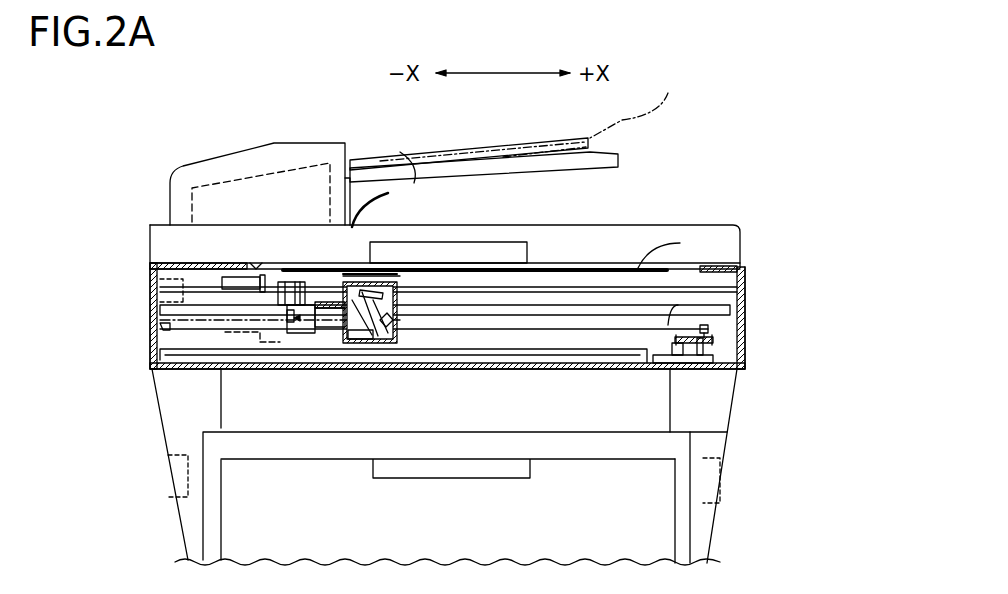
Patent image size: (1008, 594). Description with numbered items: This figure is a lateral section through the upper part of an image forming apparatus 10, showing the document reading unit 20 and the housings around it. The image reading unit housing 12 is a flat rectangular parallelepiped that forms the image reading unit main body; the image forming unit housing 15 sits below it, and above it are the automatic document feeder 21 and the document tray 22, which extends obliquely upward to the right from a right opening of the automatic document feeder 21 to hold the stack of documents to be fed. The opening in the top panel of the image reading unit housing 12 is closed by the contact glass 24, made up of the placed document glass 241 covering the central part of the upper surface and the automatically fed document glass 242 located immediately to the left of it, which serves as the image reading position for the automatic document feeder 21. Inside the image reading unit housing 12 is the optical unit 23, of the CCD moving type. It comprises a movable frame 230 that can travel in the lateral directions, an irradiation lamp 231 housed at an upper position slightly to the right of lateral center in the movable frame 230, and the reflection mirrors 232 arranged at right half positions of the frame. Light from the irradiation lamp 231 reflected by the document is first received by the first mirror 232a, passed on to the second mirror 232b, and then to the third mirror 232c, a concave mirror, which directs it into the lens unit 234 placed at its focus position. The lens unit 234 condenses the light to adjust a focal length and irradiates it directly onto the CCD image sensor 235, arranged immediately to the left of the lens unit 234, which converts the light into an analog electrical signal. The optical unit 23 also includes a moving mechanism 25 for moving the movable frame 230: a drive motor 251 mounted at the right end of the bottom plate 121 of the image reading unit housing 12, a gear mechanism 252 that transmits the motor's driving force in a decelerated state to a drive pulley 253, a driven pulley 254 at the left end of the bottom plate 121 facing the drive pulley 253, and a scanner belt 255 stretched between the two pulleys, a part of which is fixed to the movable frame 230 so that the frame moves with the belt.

The image forming apparatus 10 is at (795, 174).
The image reading unit housing 12 is at (758, 298).
The bottom plate 121 is at (538, 352).
The image forming unit housing 15 is at (232, 450).
The document reading unit 20 is at (302, 112).
The automatic document feeder 21 is at (237, 197).
The document tray 22 is at (417, 182).
The optical unit 23 is at (146, 266).
The movable frame 230 is at (316, 278).
The irradiation lamp 231 is at (350, 285).
The reflection mirrors 232 is at (833, 181).
The first mirror 232a is at (397, 334).
The second mirror 232b is at (378, 286).
The third mirror 232c is at (397, 346).
The lens unit 234 is at (330, 323).
The CCD image sensor 235 is at (290, 327).
The contact glass 24 is at (85, 265).
The placed document glass 241 is at (298, 290).
The automatically fed document glass 242 is at (225, 283).
The moving mechanism 25 is at (823, 318).
The drive motor 251 is at (690, 358).
The gear mechanism 252 is at (677, 353).
The drive pulley 253 is at (700, 340).
The driven pulley 254 is at (530, 466).
The scanner belt 255 is at (700, 325).